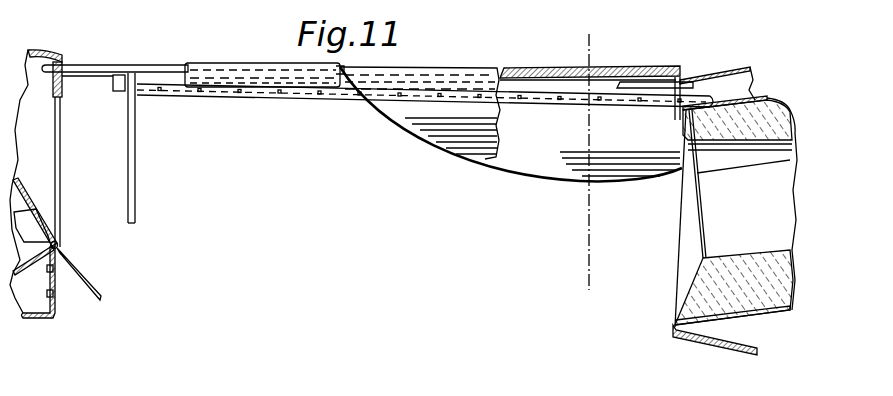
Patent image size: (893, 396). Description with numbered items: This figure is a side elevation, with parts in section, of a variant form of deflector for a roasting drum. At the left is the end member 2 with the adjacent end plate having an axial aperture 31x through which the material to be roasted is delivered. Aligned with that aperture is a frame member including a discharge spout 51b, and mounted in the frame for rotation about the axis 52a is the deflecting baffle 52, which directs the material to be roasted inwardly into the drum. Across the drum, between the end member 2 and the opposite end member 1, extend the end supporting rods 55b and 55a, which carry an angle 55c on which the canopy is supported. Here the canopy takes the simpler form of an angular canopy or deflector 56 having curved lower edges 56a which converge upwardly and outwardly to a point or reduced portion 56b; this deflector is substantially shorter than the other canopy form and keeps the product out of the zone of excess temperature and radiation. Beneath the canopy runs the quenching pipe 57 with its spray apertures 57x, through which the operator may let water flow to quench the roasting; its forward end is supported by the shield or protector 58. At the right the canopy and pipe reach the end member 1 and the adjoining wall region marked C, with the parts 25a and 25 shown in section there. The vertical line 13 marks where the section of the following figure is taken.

The end member 1 is at (714, 345).
The end member 2 is at (37, 320).
The section line 13 is at (620, 32).
The lower block 25 is at (770, 300).
The upper block 25a is at (758, 214).
The axial aperture 31x is at (60, 145).
The discharge spout 51b is at (26, 268).
The deflecting baffle 52 is at (22, 216).
The axis 52a is at (58, 242).
The end supporting rod 55a is at (653, 82).
The end supporting rod 55b is at (88, 63).
The angle 55c is at (248, 72).
The angular canopy 56 is at (462, 72).
The curved lower edges 56a is at (483, 160).
The point or reduced portion 56b is at (340, 72).
The quenching pipe 57 is at (235, 97).
The spray apertures 57x is at (283, 97).
The shield or protector 58 is at (137, 157).
The compartment wall C is at (776, 98).